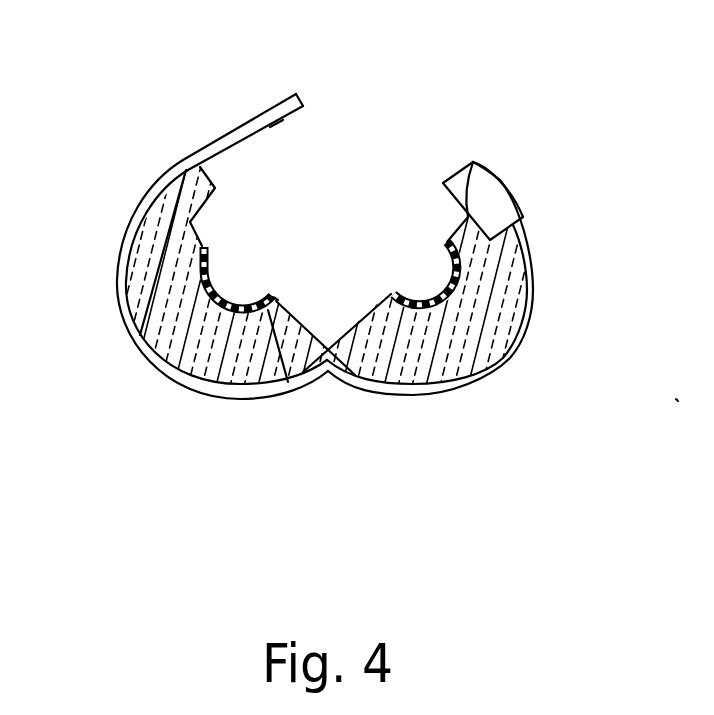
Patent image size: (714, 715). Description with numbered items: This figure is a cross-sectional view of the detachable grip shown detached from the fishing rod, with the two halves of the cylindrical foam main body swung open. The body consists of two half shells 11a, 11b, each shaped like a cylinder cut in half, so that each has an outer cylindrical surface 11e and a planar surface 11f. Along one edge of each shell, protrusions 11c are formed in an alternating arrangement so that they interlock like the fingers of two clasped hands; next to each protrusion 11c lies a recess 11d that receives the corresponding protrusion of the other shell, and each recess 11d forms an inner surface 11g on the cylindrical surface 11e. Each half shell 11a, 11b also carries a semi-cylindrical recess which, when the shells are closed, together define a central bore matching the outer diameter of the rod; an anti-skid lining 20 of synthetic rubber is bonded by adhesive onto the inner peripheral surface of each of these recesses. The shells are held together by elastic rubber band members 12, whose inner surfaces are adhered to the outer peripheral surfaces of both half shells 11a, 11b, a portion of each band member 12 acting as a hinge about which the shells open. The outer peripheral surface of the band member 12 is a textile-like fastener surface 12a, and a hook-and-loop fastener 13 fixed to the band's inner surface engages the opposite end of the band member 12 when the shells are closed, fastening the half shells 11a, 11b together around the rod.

The half shell 11a is at (500, 300).
The half shell 11b is at (173, 370).
The protrusion 11c is at (193, 192).
The recess 11d is at (507, 190).
The cylindrical surface 11e is at (533, 260).
The planar surface 11f is at (363, 310).
The inner surface 11g is at (473, 160).
The band member 12 is at (225, 138).
The fastener surface 12a is at (118, 232).
The hook-and-loop fastener 13 is at (293, 120).
The anti-skid lining 20 is at (273, 303).